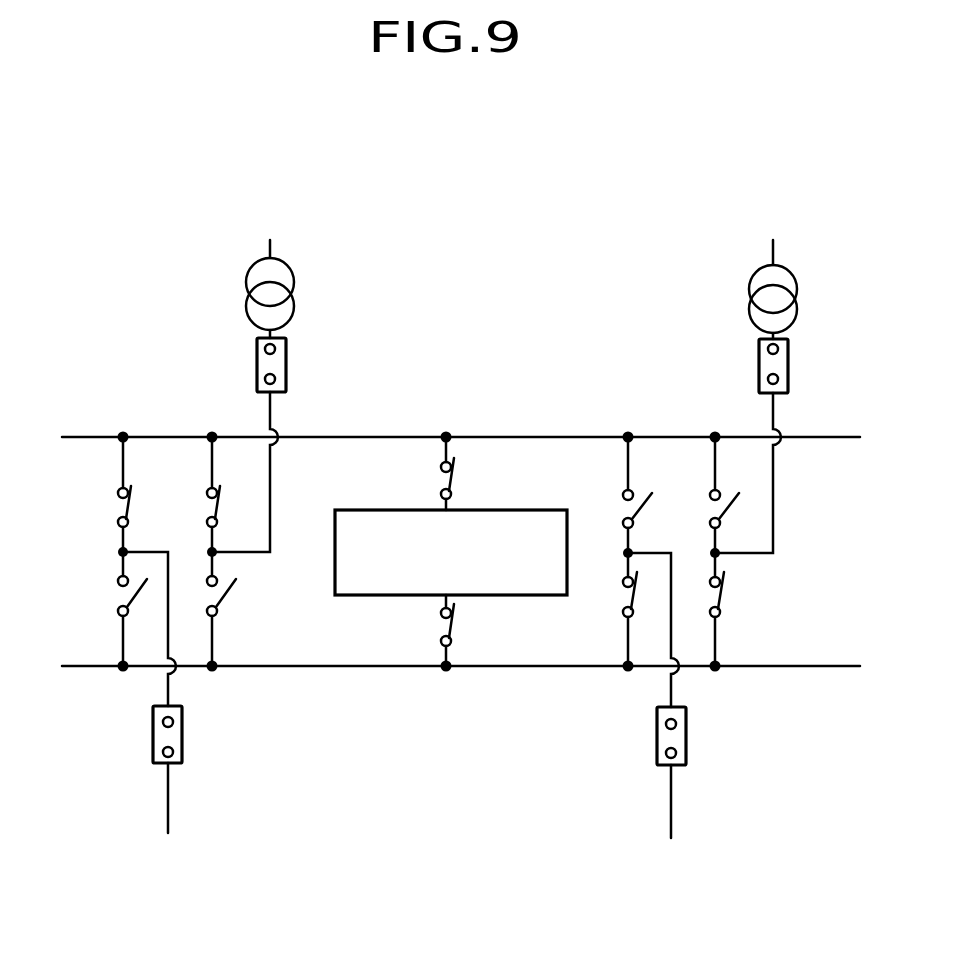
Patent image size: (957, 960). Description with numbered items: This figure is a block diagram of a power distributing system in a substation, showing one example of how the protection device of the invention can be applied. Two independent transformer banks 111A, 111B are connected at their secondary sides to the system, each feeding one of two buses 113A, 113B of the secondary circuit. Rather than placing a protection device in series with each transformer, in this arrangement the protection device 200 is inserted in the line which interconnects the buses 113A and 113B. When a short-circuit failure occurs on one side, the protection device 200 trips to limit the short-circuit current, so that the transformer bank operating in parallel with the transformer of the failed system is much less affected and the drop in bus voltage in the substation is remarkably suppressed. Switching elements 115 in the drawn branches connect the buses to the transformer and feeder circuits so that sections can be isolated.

The transformer bank 111A is at (295, 280).
The transformer bank 111B is at (797, 287).
The bus 113A is at (840, 438).
The bus 113B is at (833, 667).
The disconnecting switch 115 is at (120, 505).
The protection device 200 is at (532, 596).